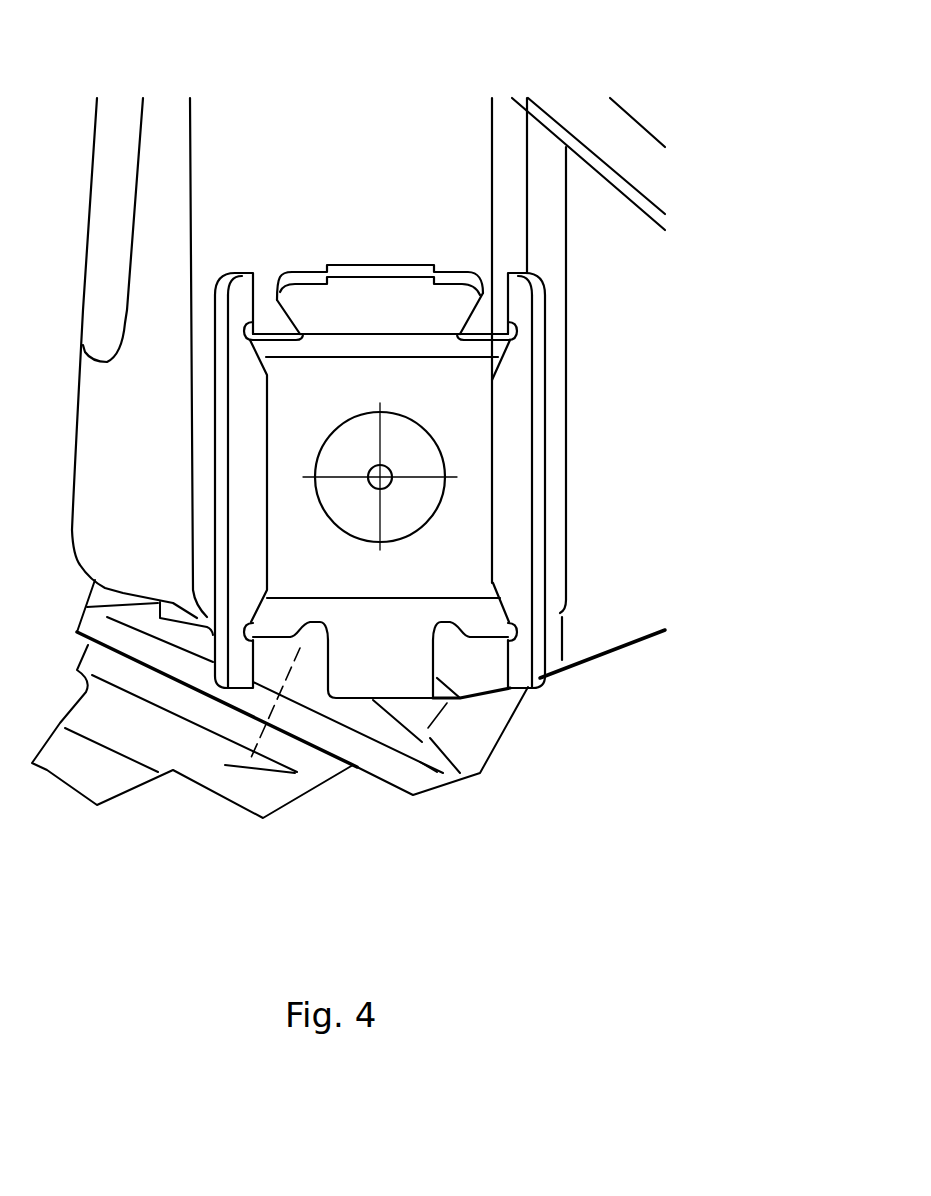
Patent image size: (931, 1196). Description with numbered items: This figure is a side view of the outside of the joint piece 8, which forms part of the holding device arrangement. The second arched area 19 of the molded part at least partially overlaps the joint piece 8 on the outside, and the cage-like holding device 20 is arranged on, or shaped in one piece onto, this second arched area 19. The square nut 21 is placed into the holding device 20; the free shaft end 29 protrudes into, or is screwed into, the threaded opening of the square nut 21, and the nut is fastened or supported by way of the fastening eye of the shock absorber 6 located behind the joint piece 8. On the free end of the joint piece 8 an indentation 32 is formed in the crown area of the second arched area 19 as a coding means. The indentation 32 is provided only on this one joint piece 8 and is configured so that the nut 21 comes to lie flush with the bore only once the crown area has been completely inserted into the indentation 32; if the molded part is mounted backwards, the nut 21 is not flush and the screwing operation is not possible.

The shock absorber 6 is at (300, 788).
The joint piece 8 is at (402, 173).
The second arched area 19 is at (400, 651).
The cage-like holding device 20 is at (525, 362).
The square nut 21 is at (433, 395).
The free shaft end 29 is at (418, 508).
The indentation 32 is at (440, 690).